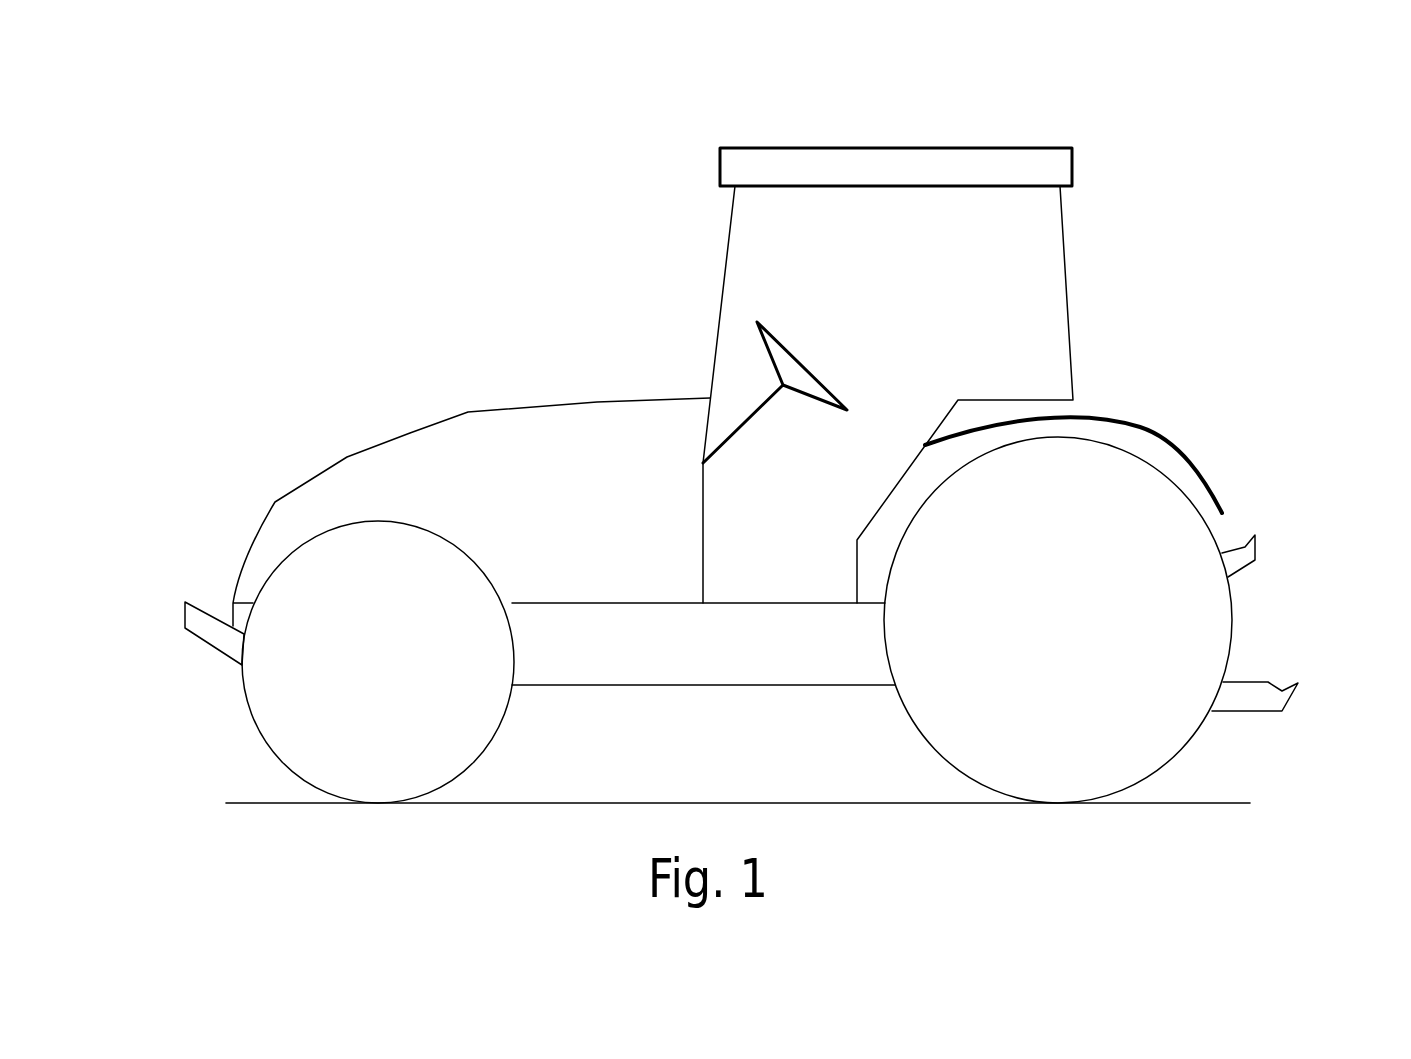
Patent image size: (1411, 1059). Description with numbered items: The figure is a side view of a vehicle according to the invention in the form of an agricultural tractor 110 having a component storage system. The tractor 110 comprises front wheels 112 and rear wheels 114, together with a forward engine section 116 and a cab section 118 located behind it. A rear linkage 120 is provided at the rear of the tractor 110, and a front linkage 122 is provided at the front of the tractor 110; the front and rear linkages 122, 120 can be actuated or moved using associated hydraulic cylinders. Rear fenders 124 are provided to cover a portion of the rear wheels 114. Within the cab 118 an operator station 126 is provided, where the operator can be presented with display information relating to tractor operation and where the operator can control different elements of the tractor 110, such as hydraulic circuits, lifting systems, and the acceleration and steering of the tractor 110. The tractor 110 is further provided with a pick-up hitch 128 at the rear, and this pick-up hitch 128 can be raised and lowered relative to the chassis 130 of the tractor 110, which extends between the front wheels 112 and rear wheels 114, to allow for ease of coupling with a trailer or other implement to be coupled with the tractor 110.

The agricultural tractor 110 is at (284, 131).
The front wheels 112 is at (368, 780).
The rear wheels 114 is at (1092, 753).
The forward engine section 116 is at (398, 448).
The cab section 118 is at (1015, 263).
The rear linkage 120 is at (1248, 560).
The front linkage 122 is at (215, 633).
The rear fenders 124 is at (1150, 438).
The operator station 126 is at (680, 287).
The pick-up hitch 128 is at (1245, 700).
The chassis 130 is at (715, 668).